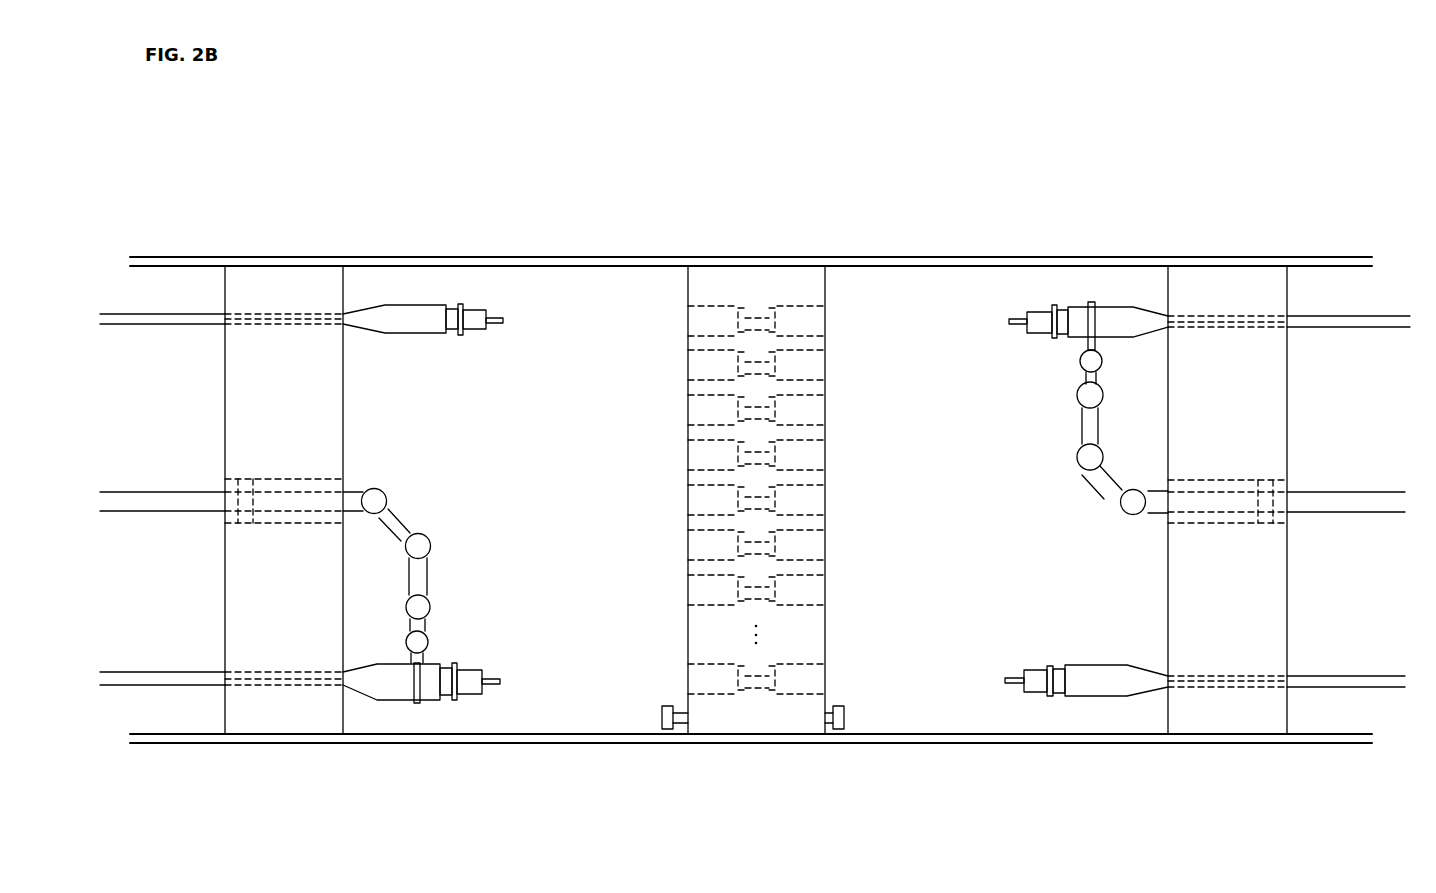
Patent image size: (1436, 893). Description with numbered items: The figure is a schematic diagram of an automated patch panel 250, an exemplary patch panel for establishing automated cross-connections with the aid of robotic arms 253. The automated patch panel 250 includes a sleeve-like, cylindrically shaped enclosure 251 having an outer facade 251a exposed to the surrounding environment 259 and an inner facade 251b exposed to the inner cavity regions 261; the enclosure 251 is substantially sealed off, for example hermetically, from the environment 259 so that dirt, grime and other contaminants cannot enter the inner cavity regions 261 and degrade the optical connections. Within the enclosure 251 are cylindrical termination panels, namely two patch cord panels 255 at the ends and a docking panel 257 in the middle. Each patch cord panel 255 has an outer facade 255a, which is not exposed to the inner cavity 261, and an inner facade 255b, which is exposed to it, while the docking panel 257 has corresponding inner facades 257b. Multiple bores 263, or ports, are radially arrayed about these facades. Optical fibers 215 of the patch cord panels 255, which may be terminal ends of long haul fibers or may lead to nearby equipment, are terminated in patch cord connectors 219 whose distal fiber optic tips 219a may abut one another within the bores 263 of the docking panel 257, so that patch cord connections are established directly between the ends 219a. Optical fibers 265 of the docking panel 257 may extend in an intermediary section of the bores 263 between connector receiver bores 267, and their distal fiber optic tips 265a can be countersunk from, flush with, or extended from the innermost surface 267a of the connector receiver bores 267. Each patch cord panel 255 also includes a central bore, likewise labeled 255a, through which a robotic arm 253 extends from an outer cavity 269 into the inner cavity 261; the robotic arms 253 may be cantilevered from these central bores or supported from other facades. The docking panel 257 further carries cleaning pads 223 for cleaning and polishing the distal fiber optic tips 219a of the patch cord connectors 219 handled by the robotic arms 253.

The automated patch panel 250 is at (441, 159).
The optical fibers 215 is at (168, 315).
The patch cord connectors 219 is at (755, 502).
The distal fiber optic tips 219a is at (1005, 678).
The cleaning pads 223 is at (658, 720).
The enclosure 251 is at (751, 256).
The outer facade 251a is at (585, 257).
The inner facade 251b is at (583, 267).
The robotic arms 253 is at (402, 510).
The patch cord panel 255 is at (755, 541).
The outer facade / central bore of patch cord panel 255a is at (287, 480).
The inner facade of patch cord panel 255b is at (343, 635).
The docking panel 257 is at (756, 508).
The inner facades of docking panel 257b is at (685, 630).
The environment 259 is at (738, 889).
The inner cavity regions 261 is at (484, 465).
The bores 263 is at (298, 330).
The optical fibers 265 is at (768, 317).
The distal fiber optic tips 265a is at (777, 502).
The connector receiver bores 267 is at (702, 453).
The innermost surface 267a is at (777, 367).
The outer cavities 269 is at (149, 465).